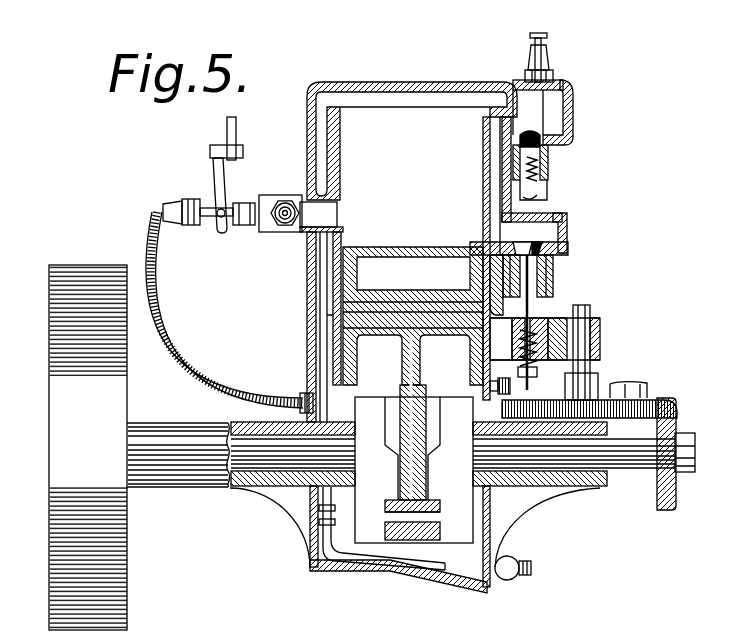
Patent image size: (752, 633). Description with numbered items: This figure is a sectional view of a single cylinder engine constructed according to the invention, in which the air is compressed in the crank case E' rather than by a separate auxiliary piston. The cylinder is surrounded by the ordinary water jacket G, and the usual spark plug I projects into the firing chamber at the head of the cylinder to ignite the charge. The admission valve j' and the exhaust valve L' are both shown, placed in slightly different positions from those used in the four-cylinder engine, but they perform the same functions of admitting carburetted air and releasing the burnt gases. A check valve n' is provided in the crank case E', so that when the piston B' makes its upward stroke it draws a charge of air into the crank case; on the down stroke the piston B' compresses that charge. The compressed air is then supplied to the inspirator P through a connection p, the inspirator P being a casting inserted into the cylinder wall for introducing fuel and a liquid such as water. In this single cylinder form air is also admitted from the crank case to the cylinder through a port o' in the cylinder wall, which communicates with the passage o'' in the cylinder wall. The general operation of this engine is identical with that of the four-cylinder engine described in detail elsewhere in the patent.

The water jacket G is at (308, 137).
The inspirator P is at (271, 175).
The spark plug I is at (550, 66).
The admission valve j' is at (558, 140).
The exhaust valve L' is at (546, 251).
The passage o'' is at (361, 299).
The piston B' is at (413, 356).
The port o' is at (306, 327).
The connection p is at (197, 347).
The check valve n' is at (421, 466).
The crank case E' is at (415, 559).